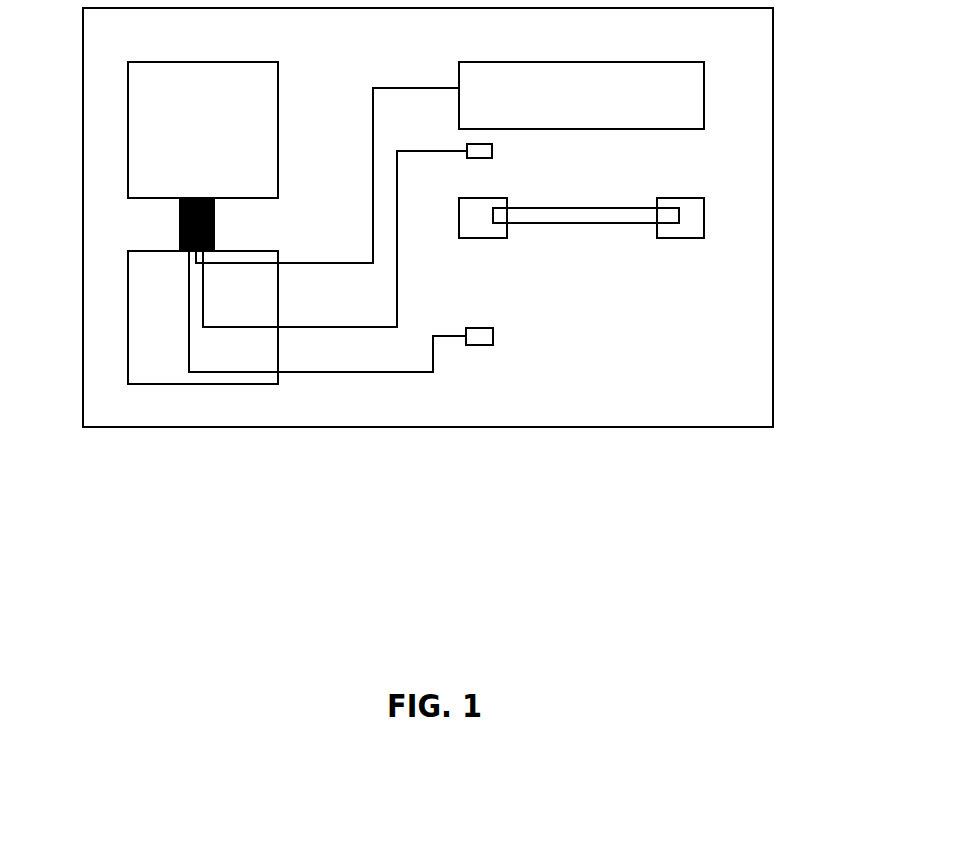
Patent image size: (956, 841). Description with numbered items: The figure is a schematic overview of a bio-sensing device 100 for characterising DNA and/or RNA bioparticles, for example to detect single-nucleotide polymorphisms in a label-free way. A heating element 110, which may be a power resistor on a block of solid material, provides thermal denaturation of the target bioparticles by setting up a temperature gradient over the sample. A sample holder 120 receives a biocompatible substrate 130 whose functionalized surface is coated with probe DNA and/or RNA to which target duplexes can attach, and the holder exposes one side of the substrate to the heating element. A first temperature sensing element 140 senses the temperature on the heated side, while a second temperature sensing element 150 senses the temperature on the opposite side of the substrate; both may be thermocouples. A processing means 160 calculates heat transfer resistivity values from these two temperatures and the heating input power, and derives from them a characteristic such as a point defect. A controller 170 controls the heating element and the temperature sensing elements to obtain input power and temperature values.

The bio-sensing device 100 is at (168, 427).
The heating element 110 is at (683, 89).
The sample holder 120 is at (704, 216).
The biocompatible substrate 130 is at (567, 216).
The first temperature sensing element 140 is at (492, 151).
The second temperature sensing element 150 is at (493, 336).
The processing means 160 is at (157, 152).
The controller 170 is at (205, 384).